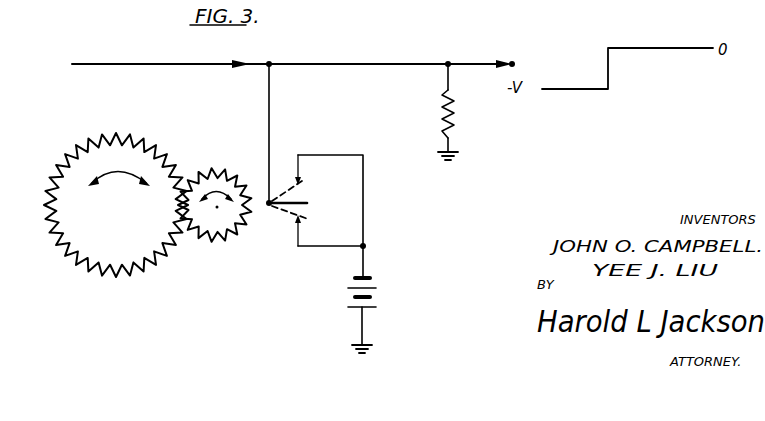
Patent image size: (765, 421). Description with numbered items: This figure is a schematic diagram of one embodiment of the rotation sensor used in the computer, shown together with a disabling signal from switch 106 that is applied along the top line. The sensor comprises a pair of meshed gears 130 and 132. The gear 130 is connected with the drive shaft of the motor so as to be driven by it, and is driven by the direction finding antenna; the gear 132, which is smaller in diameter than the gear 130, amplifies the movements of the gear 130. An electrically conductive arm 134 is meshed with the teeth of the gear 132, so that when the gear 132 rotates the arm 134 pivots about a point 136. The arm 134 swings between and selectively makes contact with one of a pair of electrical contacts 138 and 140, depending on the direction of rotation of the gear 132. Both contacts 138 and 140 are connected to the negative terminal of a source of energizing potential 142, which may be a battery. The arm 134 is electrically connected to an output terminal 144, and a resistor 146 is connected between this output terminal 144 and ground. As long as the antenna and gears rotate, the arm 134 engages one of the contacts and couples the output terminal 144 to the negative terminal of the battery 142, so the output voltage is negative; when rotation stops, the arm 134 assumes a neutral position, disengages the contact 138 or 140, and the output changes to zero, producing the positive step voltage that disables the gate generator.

The switch (source of disabling signal) 106 is at (237, 57).
The gear 130 is at (150, 148).
The gear 132 is at (229, 167).
The electrically conductive arm 134 is at (312, 203).
The point 136 is at (270, 206).
The electrical contact 138 is at (305, 185).
The electrical contact 140 is at (310, 219).
The source of energizing potential 142 is at (377, 287).
The output terminal 144 is at (514, 62).
The resistor 146 is at (452, 132).